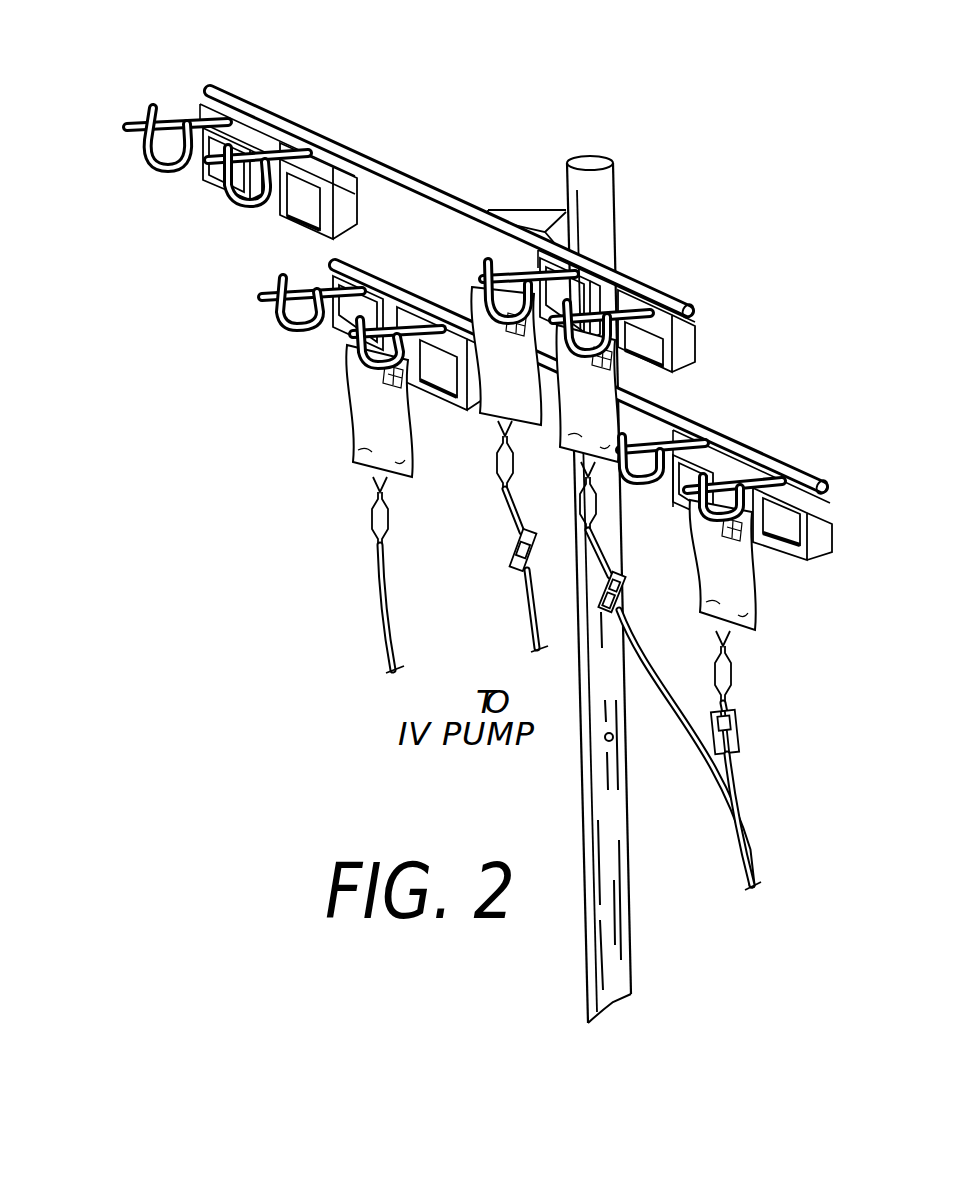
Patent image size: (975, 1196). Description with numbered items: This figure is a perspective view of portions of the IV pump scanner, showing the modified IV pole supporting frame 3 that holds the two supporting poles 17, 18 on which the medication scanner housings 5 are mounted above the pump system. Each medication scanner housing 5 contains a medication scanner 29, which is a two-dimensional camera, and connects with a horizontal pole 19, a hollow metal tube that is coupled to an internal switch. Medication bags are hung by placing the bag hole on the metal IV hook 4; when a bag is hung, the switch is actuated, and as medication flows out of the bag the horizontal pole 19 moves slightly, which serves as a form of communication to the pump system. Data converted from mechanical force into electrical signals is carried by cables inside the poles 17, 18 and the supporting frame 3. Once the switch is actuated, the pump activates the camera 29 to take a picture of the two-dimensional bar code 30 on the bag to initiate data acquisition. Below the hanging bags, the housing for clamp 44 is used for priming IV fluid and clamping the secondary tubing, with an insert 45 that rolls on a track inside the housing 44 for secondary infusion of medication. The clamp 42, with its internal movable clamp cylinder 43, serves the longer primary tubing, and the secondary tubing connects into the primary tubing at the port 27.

The IV pole supporting frame 3 is at (632, 803).
The IV hook 4 is at (152, 125).
The medication scanner housing 5 is at (784, 529).
The supporting pole 17 is at (393, 174).
The supporting pole 18 is at (767, 452).
The horizontal pole 19 is at (195, 118).
The port 27 is at (745, 780).
The medication scanner 29 is at (787, 534).
The 2D bar code 30 is at (605, 350).
The clamp 42 is at (742, 738).
The internal movable clamp cylinder 43 is at (737, 720).
The housing for clamp 44 is at (617, 592).
The insert 45 is at (620, 607).